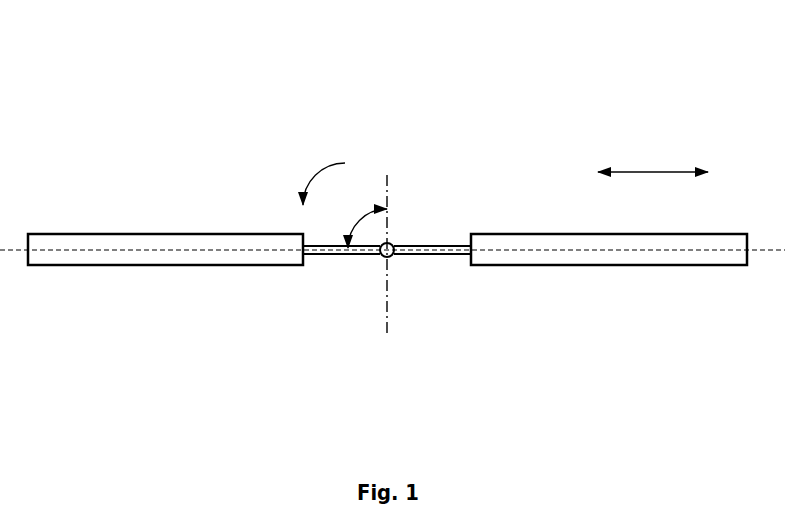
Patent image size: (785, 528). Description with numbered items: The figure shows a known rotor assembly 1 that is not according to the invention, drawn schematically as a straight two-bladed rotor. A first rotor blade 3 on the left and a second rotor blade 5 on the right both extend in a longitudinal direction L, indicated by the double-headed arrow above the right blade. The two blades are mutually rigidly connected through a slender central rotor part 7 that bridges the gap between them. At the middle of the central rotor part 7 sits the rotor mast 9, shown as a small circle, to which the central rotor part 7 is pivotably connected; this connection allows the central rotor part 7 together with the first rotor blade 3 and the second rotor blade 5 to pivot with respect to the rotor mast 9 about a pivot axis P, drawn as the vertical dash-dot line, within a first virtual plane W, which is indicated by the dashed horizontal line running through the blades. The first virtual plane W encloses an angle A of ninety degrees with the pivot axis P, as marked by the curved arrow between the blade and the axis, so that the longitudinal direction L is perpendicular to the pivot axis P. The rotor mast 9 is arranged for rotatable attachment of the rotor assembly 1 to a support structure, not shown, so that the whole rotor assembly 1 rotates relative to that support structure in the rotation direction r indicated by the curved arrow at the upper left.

The rotor assembly 1 is at (387, 181).
The first rotor blade 3 is at (160, 258).
The second rotor blade 5 is at (562, 260).
The central rotor part 7 is at (430, 254).
The rotor mast 9 is at (383, 251).
The rotation direction r is at (324, 175).
The angle A is at (361, 220).
The longitudinal direction L is at (653, 159).
The pivot axis P is at (388, 302).
The first virtual plane W is at (766, 250).